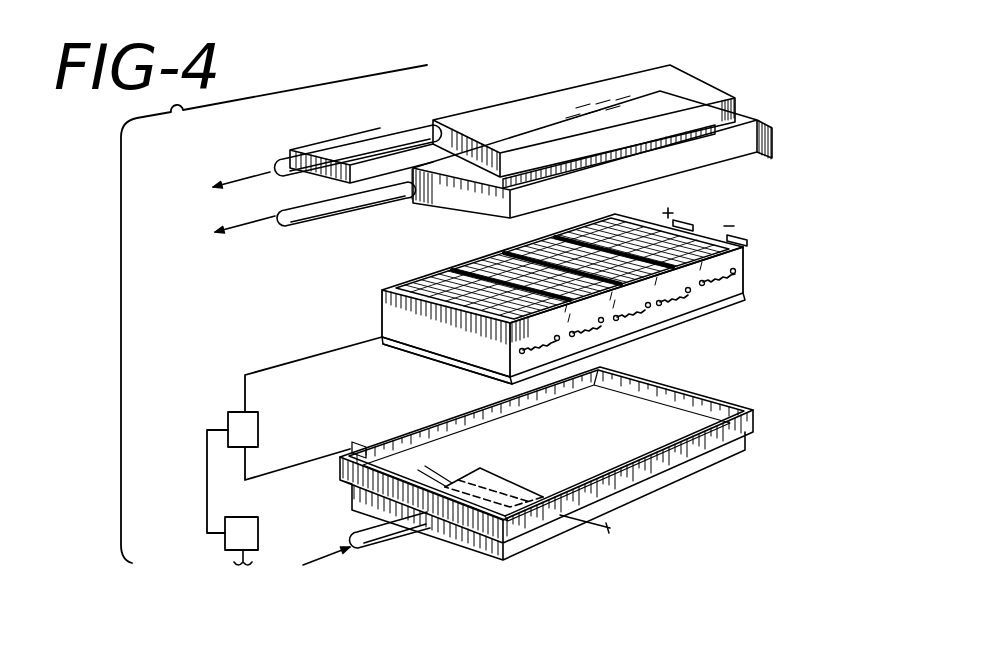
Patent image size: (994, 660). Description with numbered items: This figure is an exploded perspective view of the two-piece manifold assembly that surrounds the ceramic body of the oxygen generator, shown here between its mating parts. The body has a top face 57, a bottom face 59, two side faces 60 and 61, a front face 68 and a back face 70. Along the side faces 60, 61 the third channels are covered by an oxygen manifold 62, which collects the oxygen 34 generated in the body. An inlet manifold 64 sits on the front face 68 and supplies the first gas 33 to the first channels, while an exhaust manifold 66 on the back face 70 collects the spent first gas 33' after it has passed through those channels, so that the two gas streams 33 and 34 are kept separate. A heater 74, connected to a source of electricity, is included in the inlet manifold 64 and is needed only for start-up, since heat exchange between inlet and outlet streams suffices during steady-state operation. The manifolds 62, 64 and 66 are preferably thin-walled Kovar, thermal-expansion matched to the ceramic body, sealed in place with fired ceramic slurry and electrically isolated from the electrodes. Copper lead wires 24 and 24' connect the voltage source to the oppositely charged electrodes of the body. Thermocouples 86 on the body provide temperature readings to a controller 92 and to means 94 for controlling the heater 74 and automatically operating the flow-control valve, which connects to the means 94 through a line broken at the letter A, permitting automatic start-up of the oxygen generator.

The copper lead wire 24 is at (777, 230).
The copper lead wire 24' is at (711, 199).
The first gas 33 is at (366, 549).
The spent first gas 33' is at (305, 156).
The oxygen 34 is at (257, 243).
The top face 57 is at (745, 278).
The bottom face 59 is at (380, 328).
The side face 60 is at (380, 303).
The side face 61 is at (703, 300).
The oxygen manifold 62 is at (745, 147).
The inlet manifold 64 is at (657, 493).
The exhaust manifold 66 is at (683, 95).
The front face 68 is at (390, 350).
The back face 70 is at (424, 276).
The heater 74 is at (527, 487).
The thermocouple 86 is at (443, 347).
The control unit 92 is at (258, 428).
The means for controlling the heater and automatically operating the valve 94 is at (258, 524).